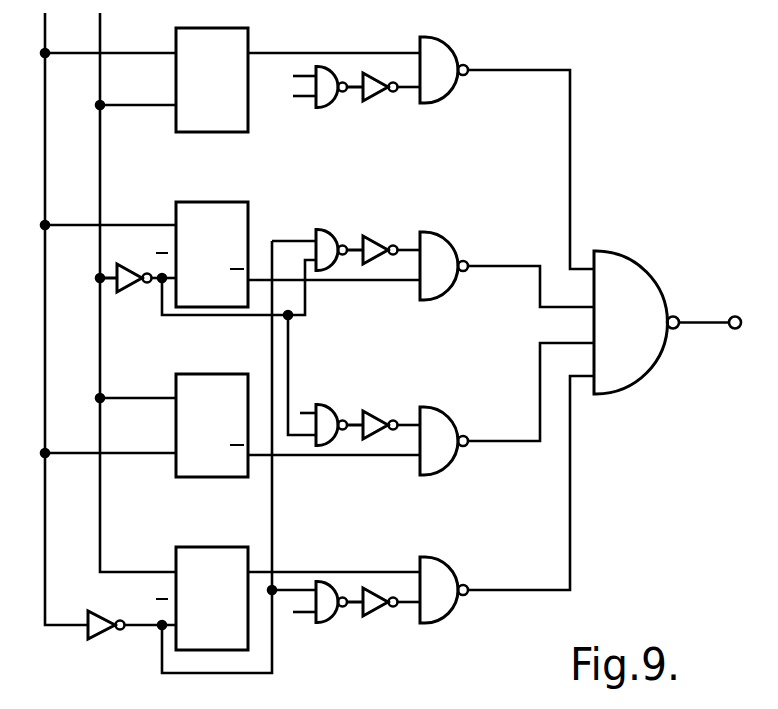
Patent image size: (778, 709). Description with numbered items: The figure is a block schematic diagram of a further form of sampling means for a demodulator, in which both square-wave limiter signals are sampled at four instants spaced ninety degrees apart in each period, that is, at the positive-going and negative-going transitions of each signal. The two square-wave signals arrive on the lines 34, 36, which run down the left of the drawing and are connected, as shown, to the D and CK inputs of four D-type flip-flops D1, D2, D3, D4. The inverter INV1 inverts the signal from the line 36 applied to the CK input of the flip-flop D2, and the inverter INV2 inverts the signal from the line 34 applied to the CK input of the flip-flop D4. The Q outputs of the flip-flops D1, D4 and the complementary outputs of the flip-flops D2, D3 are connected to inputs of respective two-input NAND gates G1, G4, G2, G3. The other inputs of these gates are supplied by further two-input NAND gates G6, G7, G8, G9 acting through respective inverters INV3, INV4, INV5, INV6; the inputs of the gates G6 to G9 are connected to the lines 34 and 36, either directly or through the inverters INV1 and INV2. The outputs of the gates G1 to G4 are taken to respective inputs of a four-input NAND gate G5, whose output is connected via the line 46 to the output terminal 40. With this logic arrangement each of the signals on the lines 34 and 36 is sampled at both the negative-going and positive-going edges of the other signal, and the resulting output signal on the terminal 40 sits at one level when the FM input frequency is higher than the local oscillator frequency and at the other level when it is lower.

The line 34 is at (45, 30).
The line 36 is at (100, 30).
The line 46 is at (698, 318).
The output terminal 40 is at (736, 316).
The D-type flip-flop D1 is at (249, 33).
The D-type flip-flop D2 is at (249, 207).
The D-type flip-flop D3 is at (210, 374).
The D-type flip-flop D4 is at (210, 547).
The 2-input NAND gate G1 is at (452, 50).
The 2-input NAND gate G2 is at (450, 235).
The 2-input NAND gate G3 is at (442, 410).
The 2-input NAND gate G4 is at (447, 571).
The 4-input NAND gate G5 is at (634, 258).
The 2-input NAND gate G6 is at (326, 66).
The 2-input NAND gate G7 is at (328, 229).
The 2-input NAND gate G8 is at (333, 446).
The 2-input NAND gate G9 is at (328, 581).
The inverter INV1 is at (130, 264).
The inverter INV2 is at (106, 616).
The inverter INV3 is at (380, 99).
The inverter INV4 is at (376, 234).
The inverter INV5 is at (379, 409).
The inverter INV6 is at (373, 613).